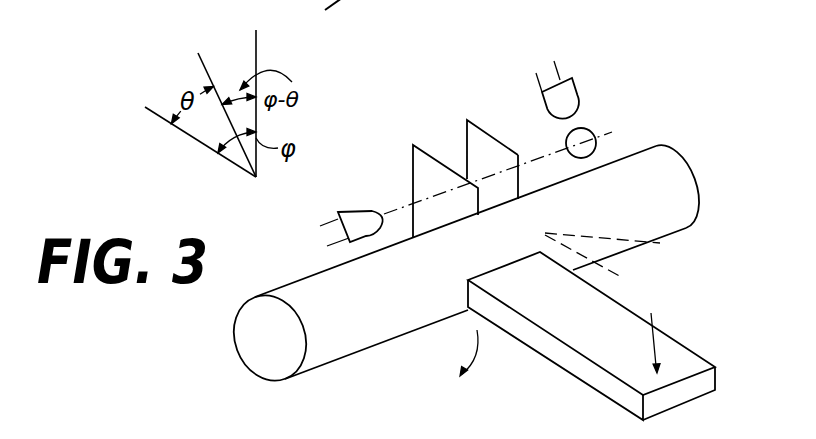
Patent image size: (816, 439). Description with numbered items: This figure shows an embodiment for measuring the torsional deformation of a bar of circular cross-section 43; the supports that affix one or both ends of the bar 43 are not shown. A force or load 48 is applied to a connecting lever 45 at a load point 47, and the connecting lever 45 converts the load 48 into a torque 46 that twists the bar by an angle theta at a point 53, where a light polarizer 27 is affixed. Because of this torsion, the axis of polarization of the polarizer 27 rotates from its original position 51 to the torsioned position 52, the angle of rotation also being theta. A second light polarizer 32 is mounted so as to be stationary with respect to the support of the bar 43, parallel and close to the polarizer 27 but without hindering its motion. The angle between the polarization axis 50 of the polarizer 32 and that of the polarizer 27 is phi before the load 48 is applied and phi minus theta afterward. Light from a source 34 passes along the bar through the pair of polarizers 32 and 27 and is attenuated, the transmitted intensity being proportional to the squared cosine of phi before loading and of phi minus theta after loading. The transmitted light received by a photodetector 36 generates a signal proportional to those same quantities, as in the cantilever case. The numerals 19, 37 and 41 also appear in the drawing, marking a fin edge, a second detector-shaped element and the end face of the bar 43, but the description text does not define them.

The fin edge 19 is at (536, 158).
The light polarizer 27 is at (430, 175).
The light polarizer 32 is at (483, 134).
The light source 34 is at (597, 124).
The photodetector 36 is at (348, 214).
The second detector 37 is at (578, 90).
The cylinder end face 41 is at (270, 338).
The bar of circular cross-section 43 is at (477, 262).
The connecting lever 45 is at (591, 336).
The torque 46 is at (451, 353).
The load point 47 is at (634, 366).
The force or load 48 is at (651, 330).
The polarization axis 50 is at (256, 89).
The original position 51 is at (194, 127).
The torsioned position 52 is at (219, 98).
The point 53 is at (561, 255).